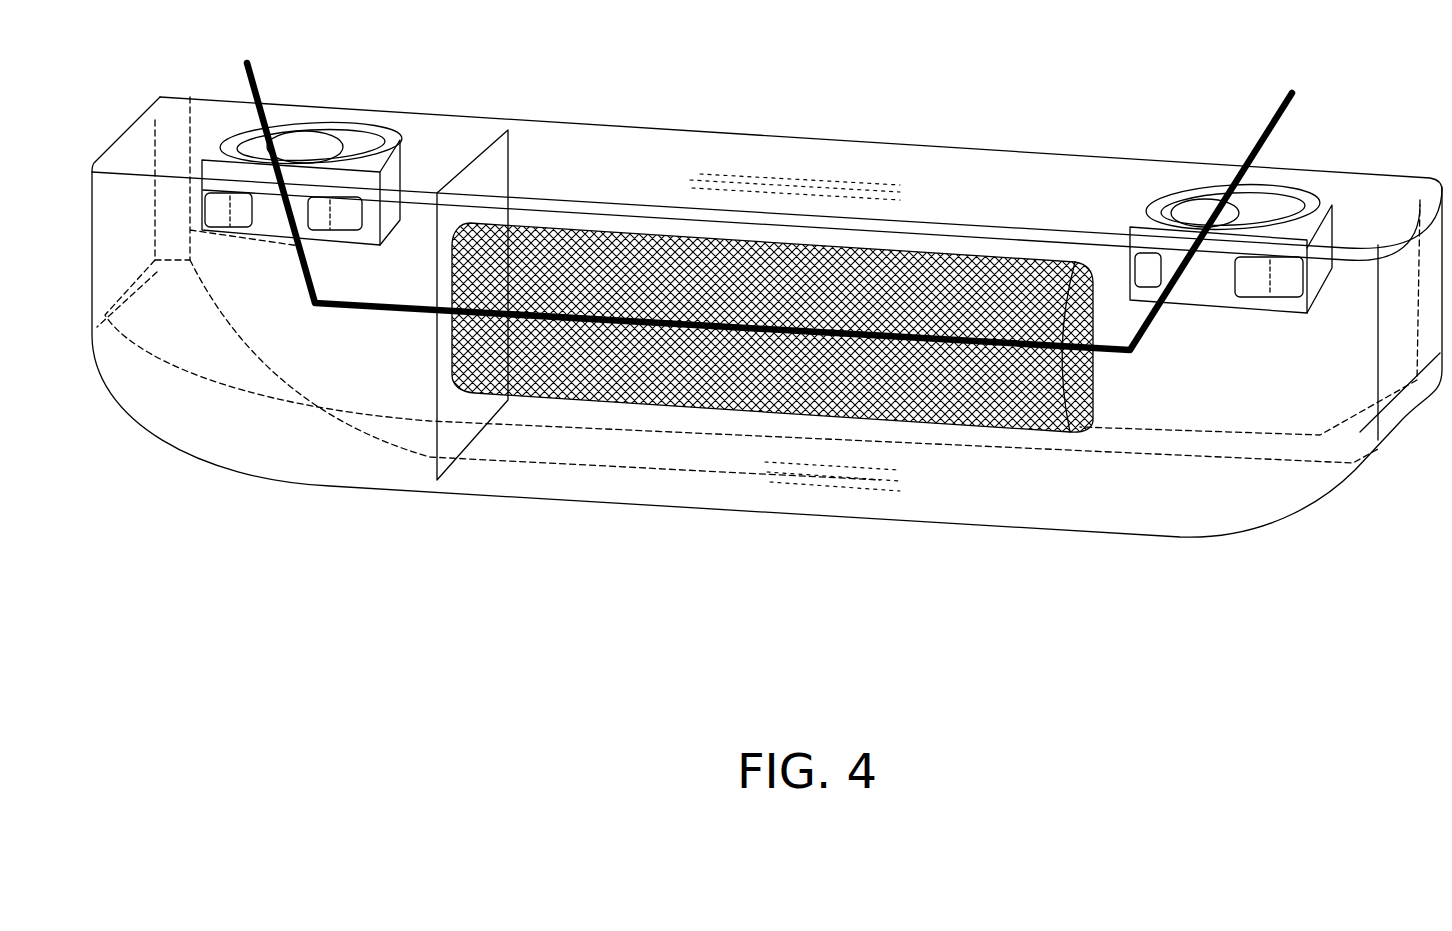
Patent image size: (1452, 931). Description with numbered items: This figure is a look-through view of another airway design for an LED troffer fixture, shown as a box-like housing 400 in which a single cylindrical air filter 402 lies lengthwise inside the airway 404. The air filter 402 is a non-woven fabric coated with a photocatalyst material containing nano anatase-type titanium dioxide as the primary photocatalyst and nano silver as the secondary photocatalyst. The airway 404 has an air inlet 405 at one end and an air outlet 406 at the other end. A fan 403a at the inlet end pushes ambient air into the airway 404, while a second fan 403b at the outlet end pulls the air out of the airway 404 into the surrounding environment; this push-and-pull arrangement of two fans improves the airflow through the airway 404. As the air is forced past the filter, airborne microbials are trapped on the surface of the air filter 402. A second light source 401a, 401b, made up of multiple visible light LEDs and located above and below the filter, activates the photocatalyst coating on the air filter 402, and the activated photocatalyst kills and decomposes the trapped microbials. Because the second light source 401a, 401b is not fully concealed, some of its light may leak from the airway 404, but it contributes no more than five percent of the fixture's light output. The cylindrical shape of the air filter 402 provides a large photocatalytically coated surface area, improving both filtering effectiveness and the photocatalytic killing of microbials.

The housing 400 is at (767, 288).
The second light source 401a is at (747, 187).
The second light source 401b is at (743, 463).
The cylindrical air filter 402 is at (920, 258).
The fan 403a is at (377, 140).
The fan 403b is at (1162, 197).
The airway 404 is at (784, 203).
The air inlet 405 is at (333, 147).
The air outlet 406 is at (1180, 213).